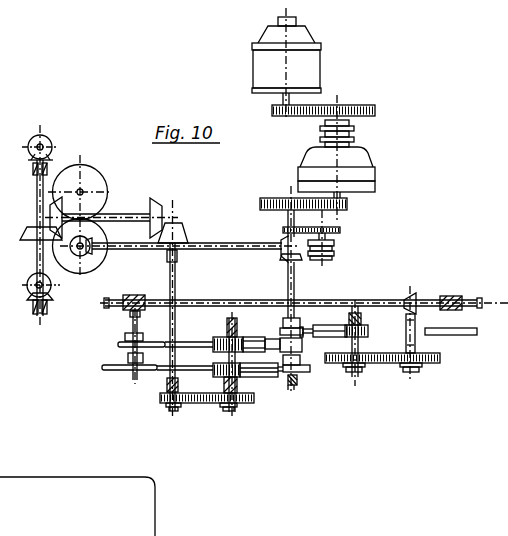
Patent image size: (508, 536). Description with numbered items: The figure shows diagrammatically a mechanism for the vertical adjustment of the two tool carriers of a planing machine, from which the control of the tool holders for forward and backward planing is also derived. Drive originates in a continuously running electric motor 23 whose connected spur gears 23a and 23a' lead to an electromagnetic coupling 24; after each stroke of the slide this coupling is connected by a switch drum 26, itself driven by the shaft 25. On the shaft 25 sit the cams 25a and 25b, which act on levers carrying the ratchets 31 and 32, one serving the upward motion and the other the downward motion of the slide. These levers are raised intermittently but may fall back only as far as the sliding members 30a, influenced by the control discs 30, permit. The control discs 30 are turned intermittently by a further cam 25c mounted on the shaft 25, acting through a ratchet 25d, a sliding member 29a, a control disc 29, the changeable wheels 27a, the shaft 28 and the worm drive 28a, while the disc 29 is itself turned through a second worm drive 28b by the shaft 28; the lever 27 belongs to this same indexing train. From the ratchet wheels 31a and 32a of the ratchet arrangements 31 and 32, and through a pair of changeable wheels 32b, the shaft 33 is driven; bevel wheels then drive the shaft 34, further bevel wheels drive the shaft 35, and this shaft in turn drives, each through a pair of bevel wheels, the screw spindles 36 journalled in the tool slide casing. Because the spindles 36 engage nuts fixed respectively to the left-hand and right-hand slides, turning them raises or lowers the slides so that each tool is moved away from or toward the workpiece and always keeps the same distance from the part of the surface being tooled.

The electric motor 23 is at (306, 72).
The spur gear 23a is at (314, 126).
The spur gear 23a' is at (382, 157).
The electromagnetic coupling 24 is at (408, 167).
The shaft 25 is at (323, 291).
The cam 25a is at (297, 374).
The cam 25b is at (301, 374).
The cam 25c is at (327, 324).
The ratchet 25d is at (400, 328).
The switch drum 26 is at (367, 257).
The lever 27 is at (317, 337).
The changeable wheels 27a is at (372, 363).
The shaft 28 is at (400, 294).
The worm drive 28a is at (152, 292).
The worm drive 28b is at (487, 293).
The control disc 29 is at (463, 335).
The sliding member 29a is at (415, 332).
The control disc 30 is at (118, 344).
The sliding member 30a is at (184, 366).
The ratchet 31 is at (263, 337).
The ratchet wheel 31a is at (237, 337).
The ratchet 32 is at (265, 377).
The ratchet wheel 32a is at (278, 441).
The changeable wheels 32b is at (210, 400).
The shaft 33 is at (203, 288).
The shaft 34 is at (134, 210).
The shaft 35 is at (38, 201).
The screw spindle 36 is at (31, 142).